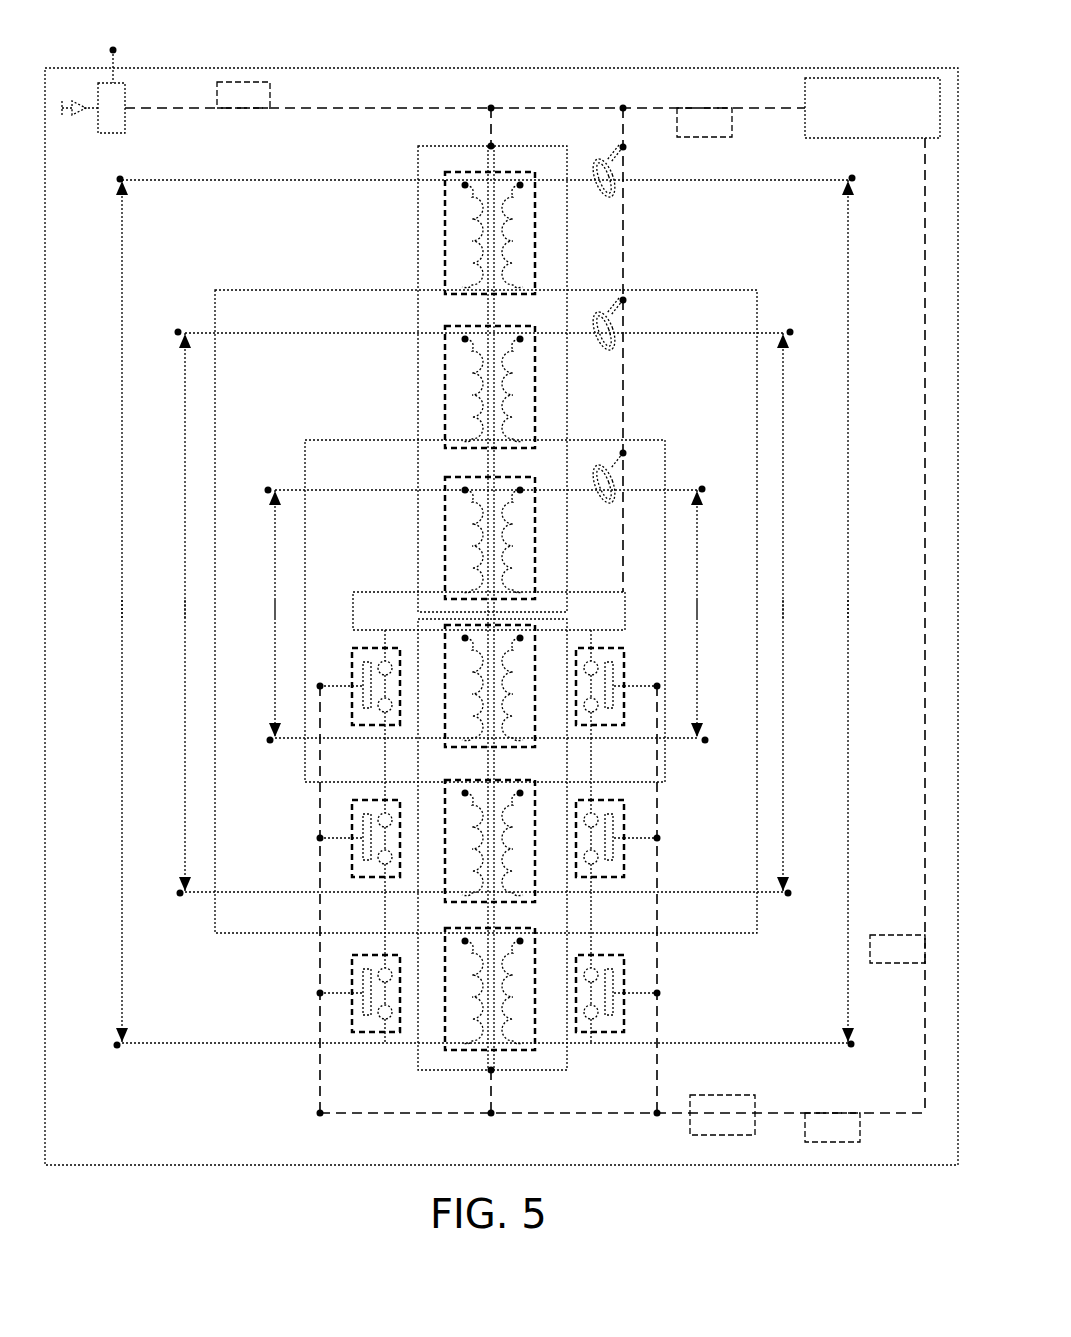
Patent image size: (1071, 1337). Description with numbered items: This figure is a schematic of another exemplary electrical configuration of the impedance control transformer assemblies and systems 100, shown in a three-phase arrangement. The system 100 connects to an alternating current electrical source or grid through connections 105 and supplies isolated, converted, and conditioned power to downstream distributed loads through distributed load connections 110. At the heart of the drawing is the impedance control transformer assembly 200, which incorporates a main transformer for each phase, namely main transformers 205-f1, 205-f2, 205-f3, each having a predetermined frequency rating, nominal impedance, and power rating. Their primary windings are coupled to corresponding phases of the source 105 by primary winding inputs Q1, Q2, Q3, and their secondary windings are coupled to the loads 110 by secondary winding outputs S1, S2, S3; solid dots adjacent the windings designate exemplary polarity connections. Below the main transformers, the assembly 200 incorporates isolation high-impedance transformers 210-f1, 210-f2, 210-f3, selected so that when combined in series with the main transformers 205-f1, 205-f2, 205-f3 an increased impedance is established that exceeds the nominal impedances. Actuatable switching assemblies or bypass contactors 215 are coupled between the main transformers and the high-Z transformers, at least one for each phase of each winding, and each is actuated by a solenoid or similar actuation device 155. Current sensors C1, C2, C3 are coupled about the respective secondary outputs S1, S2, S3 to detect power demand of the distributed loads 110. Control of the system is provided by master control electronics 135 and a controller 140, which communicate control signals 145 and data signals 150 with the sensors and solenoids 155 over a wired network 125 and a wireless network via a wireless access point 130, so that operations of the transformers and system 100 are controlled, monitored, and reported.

The impedance control transformer assembly and system 100 is at (508, 42).
The connections to electrical power source 105 is at (120, 179).
The distributed load connections 110 is at (852, 178).
The wired network 125 is at (168, 108).
The wireless access point 130 is at (105, 85).
The master control electronics 135 is at (898, 78).
The controller 140 is at (722, 1135).
The control signals 145 is at (678, 125).
The data signals 150 is at (268, 95).
The solenoid 155 is at (683, 963).
The impedance control transformer assembly 200 is at (481, 555).
The main transformer 205-f1 is at (460, 173).
The main transformer 205-f2 is at (460, 327).
The main transformer 205-f3 is at (460, 478).
The high-Z transformer 210-f1 is at (455, 750).
The high-Z transformer 210-f2 is at (455, 905).
The high-Z transformer 210-f3 is at (455, 1055).
The bypass contactor 215 is at (596, 323).
The primary winding input Q1 is at (275, 612).
The primary winding input Q2 is at (185, 612).
The primary winding input Q3 is at (122, 612).
The secondary winding output S1 is at (697, 612).
The secondary winding output S2 is at (783, 612).
The secondary winding output S3 is at (848, 612).
The current sensor C1 is at (622, 490).
The current sensor C2 is at (620, 335).
The current sensor C3 is at (620, 185).